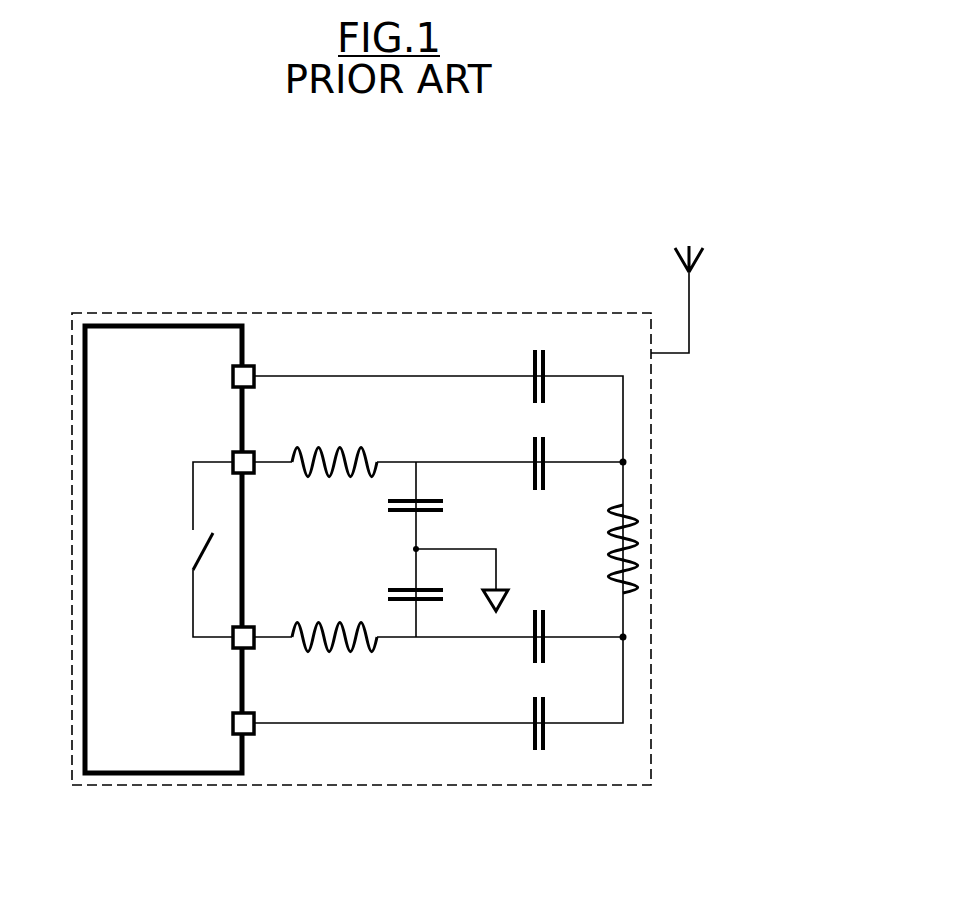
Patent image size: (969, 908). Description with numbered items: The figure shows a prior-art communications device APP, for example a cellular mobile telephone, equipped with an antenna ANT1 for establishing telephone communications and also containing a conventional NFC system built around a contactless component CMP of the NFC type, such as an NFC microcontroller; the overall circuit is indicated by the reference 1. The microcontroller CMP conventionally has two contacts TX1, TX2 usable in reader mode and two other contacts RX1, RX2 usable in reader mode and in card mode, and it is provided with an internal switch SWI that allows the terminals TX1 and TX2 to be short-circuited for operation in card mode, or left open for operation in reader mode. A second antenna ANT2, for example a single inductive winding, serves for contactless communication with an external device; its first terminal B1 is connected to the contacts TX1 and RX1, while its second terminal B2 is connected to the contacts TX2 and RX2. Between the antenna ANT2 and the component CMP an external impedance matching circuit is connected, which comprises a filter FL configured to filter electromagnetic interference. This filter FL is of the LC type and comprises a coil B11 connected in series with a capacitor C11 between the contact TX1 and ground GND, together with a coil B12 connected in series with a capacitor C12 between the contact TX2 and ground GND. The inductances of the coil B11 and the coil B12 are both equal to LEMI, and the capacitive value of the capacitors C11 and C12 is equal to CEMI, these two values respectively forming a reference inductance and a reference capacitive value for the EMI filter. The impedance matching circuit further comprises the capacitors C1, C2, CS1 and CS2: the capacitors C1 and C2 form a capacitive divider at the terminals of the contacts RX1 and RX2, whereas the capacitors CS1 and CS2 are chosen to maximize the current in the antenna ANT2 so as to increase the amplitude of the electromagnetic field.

The communications device APP is at (521, 255).
The circuit 1 is at (574, 327).
The contactless component CMP is at (161, 324).
The contact RX1 is at (232, 376).
The contact TX1 is at (232, 458).
The contact TX2 is at (232, 644).
The contact RX2 is at (232, 723).
The internal switch SWI is at (197, 553).
The filter FL is at (383, 390).
The reference inductance LEMI is at (334, 547).
The coil B11 is at (302, 481).
The coil B12 is at (302, 624).
The reference capacitive value CEMI is at (431, 539).
The capacitor C11 is at (389, 510).
The capacitor C12 is at (389, 591).
The ground GND is at (481, 578).
The capacitor C1 is at (539, 363).
The capacitor CS1 is at (538, 451).
The capacitor CS2 is at (538, 652).
The capacitor C2 is at (539, 739).
The first terminal B1 is at (628, 462).
The second terminal B2 is at (628, 637).
The antenna ANT1 is at (692, 282).
The antenna ANT2 is at (640, 536).